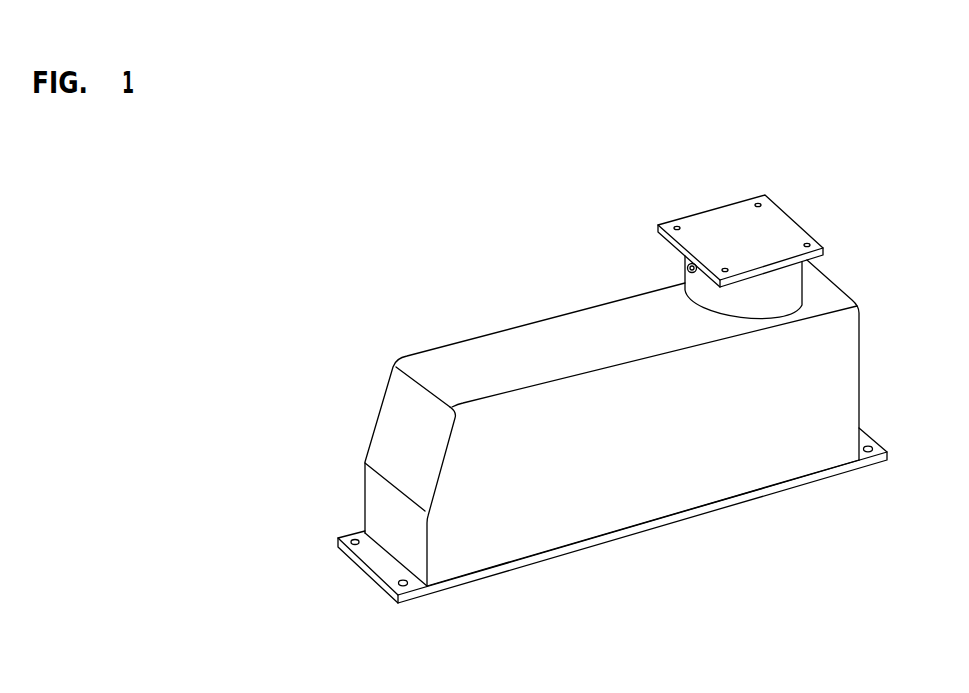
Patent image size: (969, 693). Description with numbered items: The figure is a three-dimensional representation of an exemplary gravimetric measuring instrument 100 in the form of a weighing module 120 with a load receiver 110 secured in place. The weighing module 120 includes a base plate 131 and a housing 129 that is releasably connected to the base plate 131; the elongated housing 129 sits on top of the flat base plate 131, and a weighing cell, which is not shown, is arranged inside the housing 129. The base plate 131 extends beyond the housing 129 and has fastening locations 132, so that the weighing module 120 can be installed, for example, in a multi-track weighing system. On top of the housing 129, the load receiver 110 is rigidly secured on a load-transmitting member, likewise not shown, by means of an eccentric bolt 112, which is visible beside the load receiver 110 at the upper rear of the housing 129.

The gravimetric measuring instrument 100 is at (353, 236).
The load receiver 110 is at (733, 230).
The eccentric bolt 112 is at (687, 265).
The weighing module 120 is at (560, 330).
The housing 129 is at (660, 459).
The base plate 131 is at (378, 562).
The fastening locations 132 is at (348, 530).